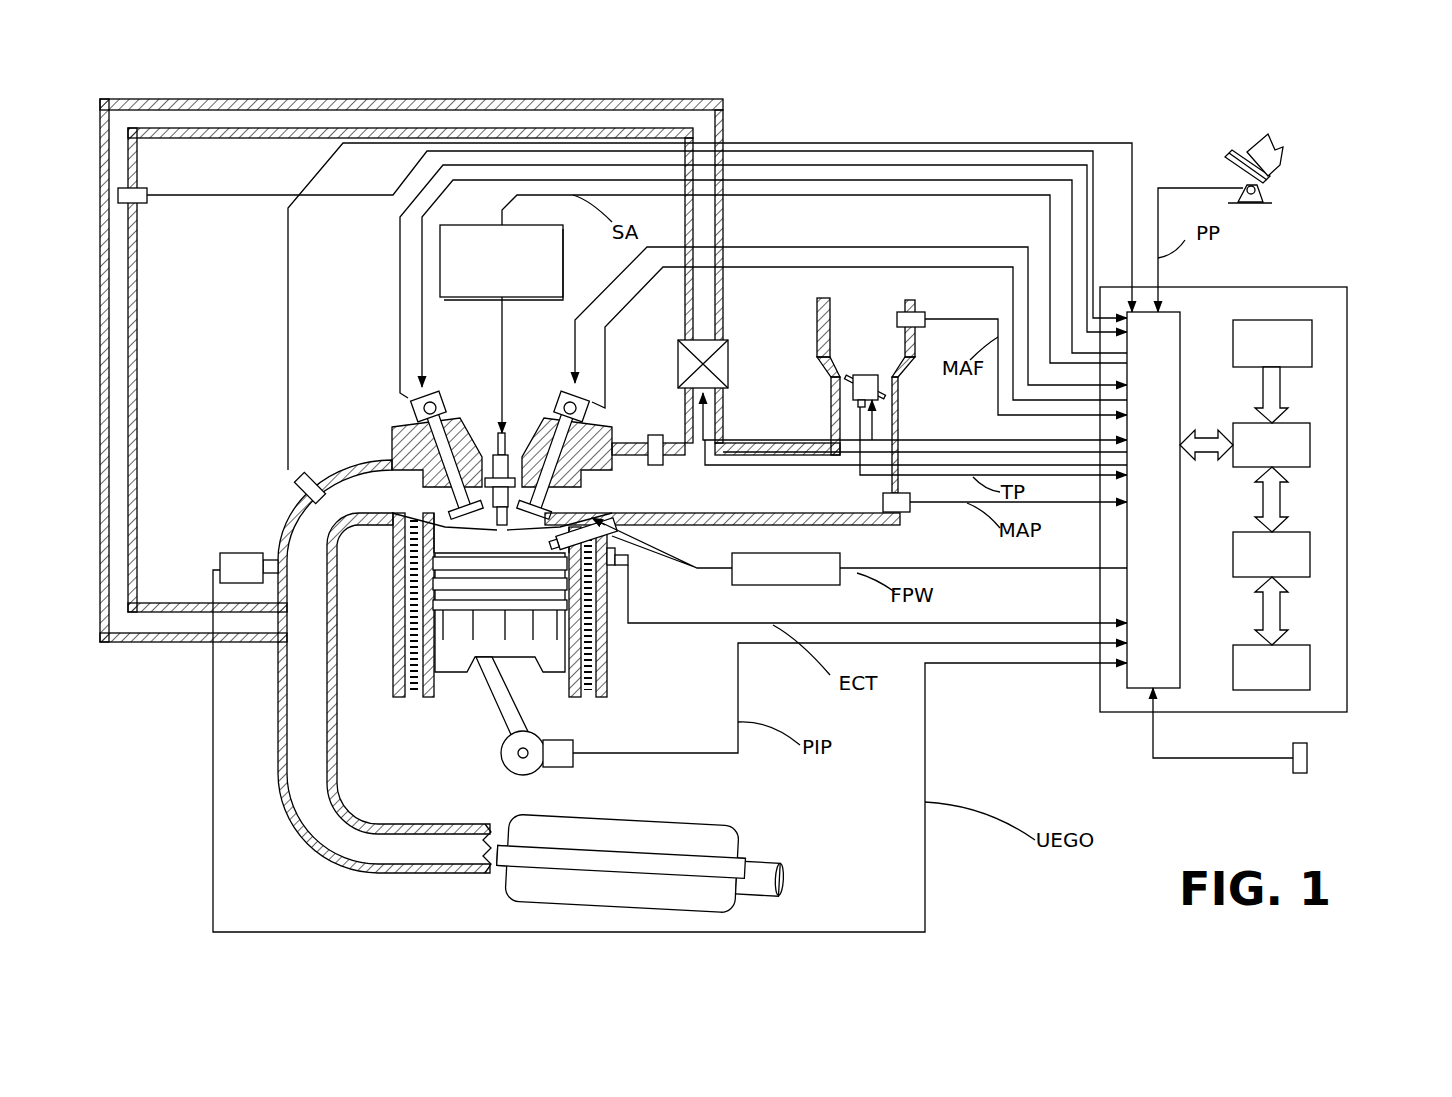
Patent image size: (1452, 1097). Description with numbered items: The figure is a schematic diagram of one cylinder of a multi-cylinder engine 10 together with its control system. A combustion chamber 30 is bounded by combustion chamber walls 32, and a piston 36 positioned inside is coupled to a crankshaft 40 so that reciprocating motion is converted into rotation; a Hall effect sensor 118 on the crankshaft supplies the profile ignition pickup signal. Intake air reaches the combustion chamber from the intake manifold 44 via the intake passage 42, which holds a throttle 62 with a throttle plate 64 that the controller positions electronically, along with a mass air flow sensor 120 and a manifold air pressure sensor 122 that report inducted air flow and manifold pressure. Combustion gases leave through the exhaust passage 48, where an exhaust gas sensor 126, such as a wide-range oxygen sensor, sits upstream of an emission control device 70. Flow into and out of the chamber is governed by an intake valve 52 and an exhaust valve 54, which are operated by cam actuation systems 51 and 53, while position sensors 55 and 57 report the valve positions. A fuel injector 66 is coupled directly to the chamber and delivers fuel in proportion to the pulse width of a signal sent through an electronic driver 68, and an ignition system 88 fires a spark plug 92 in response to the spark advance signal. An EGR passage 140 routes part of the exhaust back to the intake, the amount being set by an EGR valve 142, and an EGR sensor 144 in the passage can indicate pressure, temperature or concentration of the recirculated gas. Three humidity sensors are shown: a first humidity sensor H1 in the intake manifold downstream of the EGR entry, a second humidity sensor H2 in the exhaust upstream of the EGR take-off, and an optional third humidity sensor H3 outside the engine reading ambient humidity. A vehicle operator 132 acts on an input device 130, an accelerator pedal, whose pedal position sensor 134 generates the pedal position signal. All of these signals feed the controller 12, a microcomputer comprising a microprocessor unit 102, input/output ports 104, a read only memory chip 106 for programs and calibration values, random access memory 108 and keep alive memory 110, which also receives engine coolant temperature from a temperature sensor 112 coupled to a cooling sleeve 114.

The engine 10 is at (233, 356).
The controller 12 is at (1335, 287).
The combustion chamber 30 is at (434, 650).
The combustion chamber walls 32 is at (428, 705).
The piston 36 is at (481, 660).
The crankshaft 40 is at (507, 775).
The intake passage 42 is at (853, 349).
The intake manifold 44 is at (783, 499).
The exhaust passage 48 is at (370, 505).
The cam actuation system 51 is at (562, 396).
The intake valve 52 is at (580, 470).
The cam actuation system 53 is at (440, 396).
The exhaust valve 54 is at (425, 470).
The position sensor 55 is at (596, 416).
The position sensor 57 is at (410, 408).
The throttle 62 is at (880, 390).
The throttle plate 64 is at (848, 385).
The fuel injector 66 is at (630, 537).
The electronic driver 68 is at (762, 588).
The emission control device 70 is at (713, 830).
The ignition system 88 is at (470, 225).
The spark plug 92 is at (506, 432).
The microprocessor unit 102 is at (1310, 440).
The input/output ports 104 is at (1182, 320).
The read only memory chip 106 is at (1312, 342).
The random access memory 108 is at (1310, 552).
The keep alive memory 110 is at (1310, 665).
The temperature sensor 112 is at (620, 567).
The cooling sleeve 114 is at (588, 645).
The Hall effect sensor 118 is at (560, 768).
The mass air flow sensor 120 is at (925, 310).
The manifold air pressure sensor 122 is at (905, 512).
The exhaust gas sensor 126 is at (220, 556).
The input device 130 is at (1228, 163).
The vehicle operator 132 is at (1278, 150).
The pedal position sensor 134 is at (1262, 190).
The EGR passage 140 is at (405, 99).
The EGR valve 142 is at (728, 362).
The EGR sensor 144 is at (140, 203).
The first humidity sensor H1 is at (298, 482).
The second humidity sensor H2 is at (658, 465).
The third humidity sensor H3 is at (1307, 752).